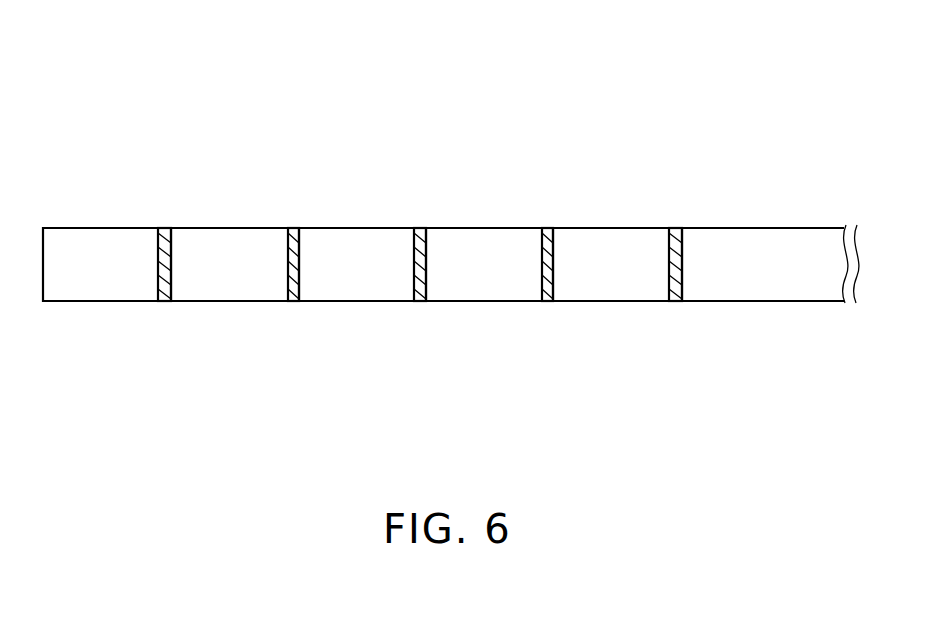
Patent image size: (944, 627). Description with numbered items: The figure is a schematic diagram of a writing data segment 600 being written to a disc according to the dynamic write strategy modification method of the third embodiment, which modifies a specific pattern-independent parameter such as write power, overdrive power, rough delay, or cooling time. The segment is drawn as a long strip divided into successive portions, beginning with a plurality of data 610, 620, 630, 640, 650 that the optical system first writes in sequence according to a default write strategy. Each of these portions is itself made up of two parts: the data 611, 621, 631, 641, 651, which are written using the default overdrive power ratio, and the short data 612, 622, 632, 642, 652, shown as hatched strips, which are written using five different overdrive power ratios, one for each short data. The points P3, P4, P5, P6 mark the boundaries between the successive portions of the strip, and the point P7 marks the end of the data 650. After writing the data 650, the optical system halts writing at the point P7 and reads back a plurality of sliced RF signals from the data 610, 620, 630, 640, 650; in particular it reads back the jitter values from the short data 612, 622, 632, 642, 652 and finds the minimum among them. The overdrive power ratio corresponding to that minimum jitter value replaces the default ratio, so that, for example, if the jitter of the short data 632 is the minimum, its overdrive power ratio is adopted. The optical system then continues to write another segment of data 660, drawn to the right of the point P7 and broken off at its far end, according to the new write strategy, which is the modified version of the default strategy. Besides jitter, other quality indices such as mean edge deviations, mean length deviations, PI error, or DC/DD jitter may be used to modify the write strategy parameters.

The writing data segment 600 is at (672, 82).
The data 610 is at (170, 223).
The data 611 is at (88, 305).
The short data 612 is at (167, 303).
The data 620 is at (299, 223).
The data 621 is at (235, 305).
The short data 622 is at (293, 303).
The data 630 is at (426, 223).
The data 631 is at (362, 305).
The short data 632 is at (420, 303).
The data 640 is at (426, 223).
The data 641 is at (488, 305).
The short data 642 is at (547, 303).
The data 650 is at (553, 223).
The data 651 is at (617, 305).
The short data 652 is at (675, 303).
The data 660 is at (761, 227).
The point P3 is at (173, 308).
The point P4 is at (301, 308).
The point P5 is at (428, 308).
The point P6 is at (555, 308).
The point P7 is at (684, 308).